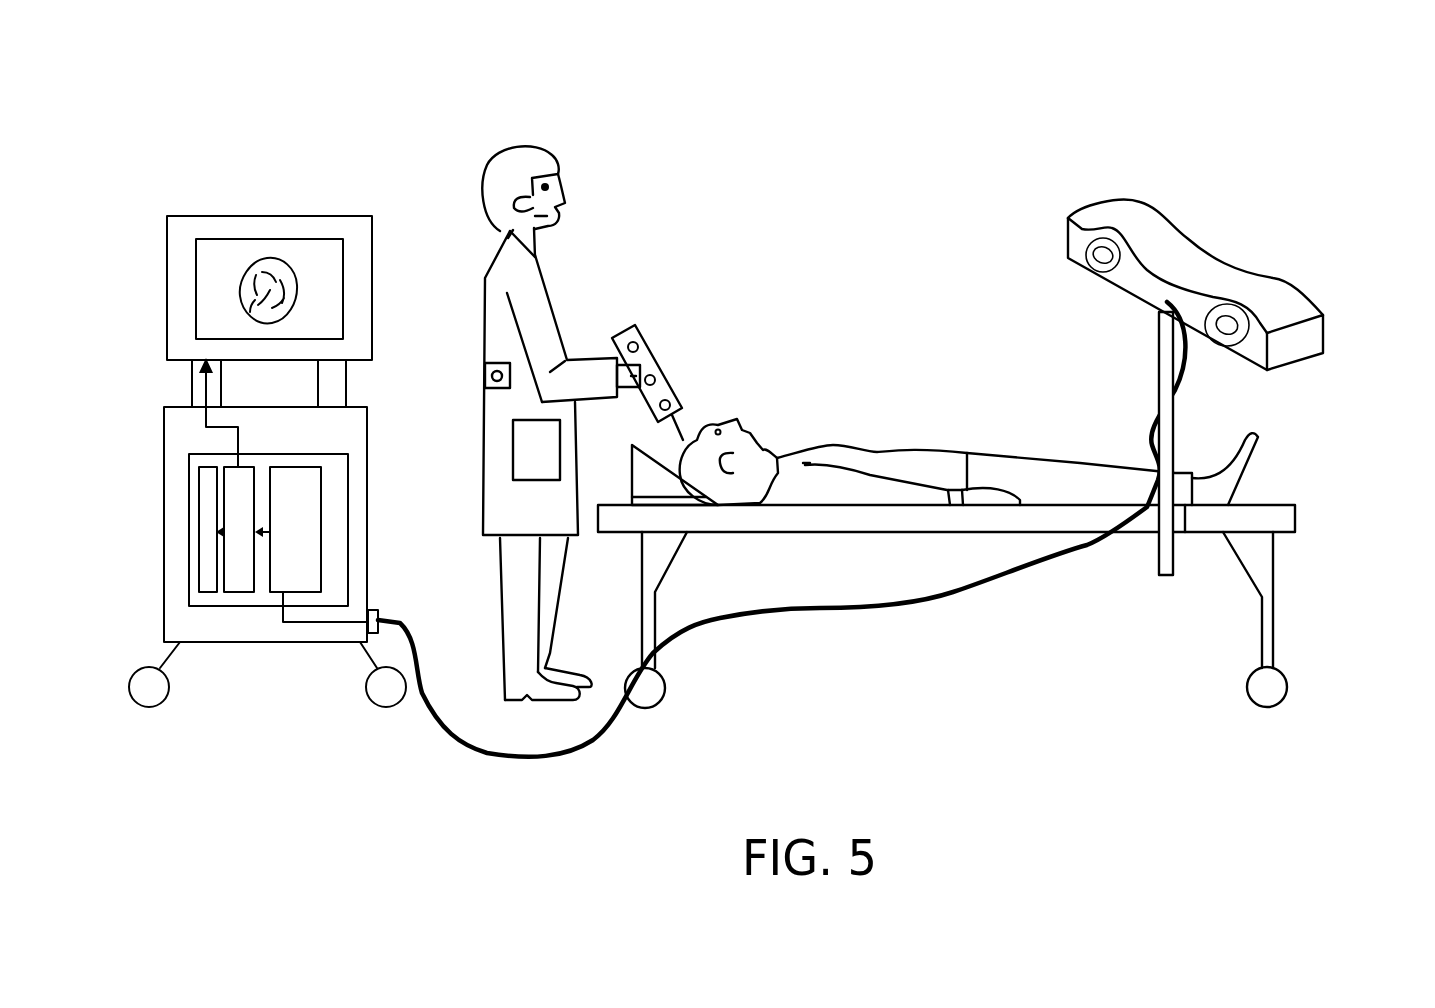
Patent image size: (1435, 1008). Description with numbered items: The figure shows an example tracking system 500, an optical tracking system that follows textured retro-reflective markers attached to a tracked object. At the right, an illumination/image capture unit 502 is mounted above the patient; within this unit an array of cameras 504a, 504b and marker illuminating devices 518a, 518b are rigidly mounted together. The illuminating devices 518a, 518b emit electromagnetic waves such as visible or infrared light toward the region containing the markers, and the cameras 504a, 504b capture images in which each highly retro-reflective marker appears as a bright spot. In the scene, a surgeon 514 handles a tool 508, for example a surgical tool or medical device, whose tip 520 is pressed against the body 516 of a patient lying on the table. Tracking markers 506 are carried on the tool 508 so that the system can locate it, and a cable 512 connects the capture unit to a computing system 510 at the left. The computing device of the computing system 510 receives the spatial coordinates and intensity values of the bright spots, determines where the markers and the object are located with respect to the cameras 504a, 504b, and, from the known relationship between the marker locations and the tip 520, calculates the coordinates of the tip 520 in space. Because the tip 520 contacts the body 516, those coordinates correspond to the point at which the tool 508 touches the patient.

The tracking system 500 is at (341, 148).
The illumination/image capture unit 502 is at (1298, 337).
The camera 504a is at (1090, 258).
The camera 504b is at (1222, 333).
The tracking markers 506 is at (668, 405).
The tool 508 is at (635, 322).
The computing system 510 is at (350, 472).
The cable 512 is at (913, 612).
The surgeon 514 is at (500, 318).
The body of a patient 516 is at (903, 450).
The marker illuminating device 518a is at (1125, 262).
The marker illuminating device 518b is at (1243, 327).
The tip of the object 520 is at (697, 440).